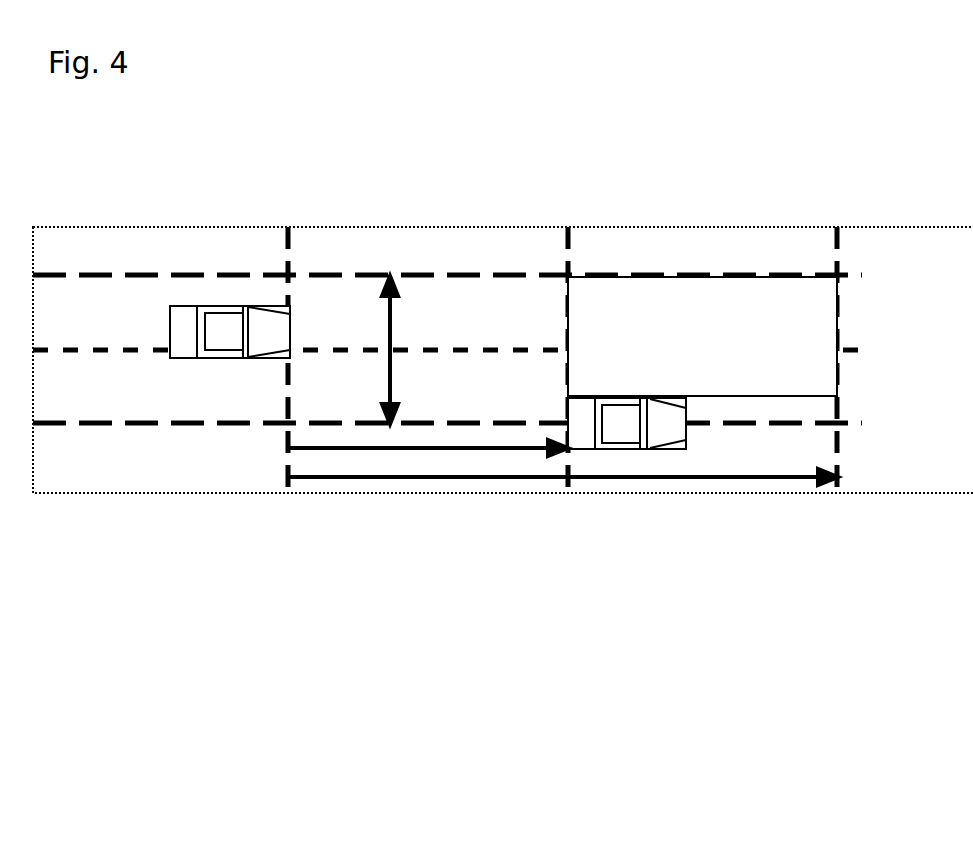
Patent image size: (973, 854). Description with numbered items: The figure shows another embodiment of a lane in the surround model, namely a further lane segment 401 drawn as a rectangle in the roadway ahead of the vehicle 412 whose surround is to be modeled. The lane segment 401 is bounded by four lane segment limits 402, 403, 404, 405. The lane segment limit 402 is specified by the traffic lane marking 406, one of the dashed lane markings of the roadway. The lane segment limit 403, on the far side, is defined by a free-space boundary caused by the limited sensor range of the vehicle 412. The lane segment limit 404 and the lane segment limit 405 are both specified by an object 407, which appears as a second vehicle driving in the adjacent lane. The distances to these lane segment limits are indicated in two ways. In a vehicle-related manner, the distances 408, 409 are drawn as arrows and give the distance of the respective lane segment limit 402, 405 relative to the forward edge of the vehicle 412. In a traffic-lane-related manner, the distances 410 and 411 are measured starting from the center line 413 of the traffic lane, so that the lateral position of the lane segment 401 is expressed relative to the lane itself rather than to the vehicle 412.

The lane segment 401 is at (625, 350).
The lane segment limit 402 is at (598, 277).
The lane segment limit 403 is at (838, 338).
The lane segment limit 404 is at (747, 396).
The lane segment limit 405 is at (565, 340).
The traffic lane marking 406 is at (95, 275).
The object 407 is at (620, 425).
The vehicle-related distance 408 is at (348, 448).
The vehicle-related distance 409 is at (785, 477).
The traffic-lane-related distance 410 is at (390, 324).
The traffic-lane-related distance 411 is at (390, 383).
The vehicle 412 is at (220, 325).
The center line 413 is at (425, 350).